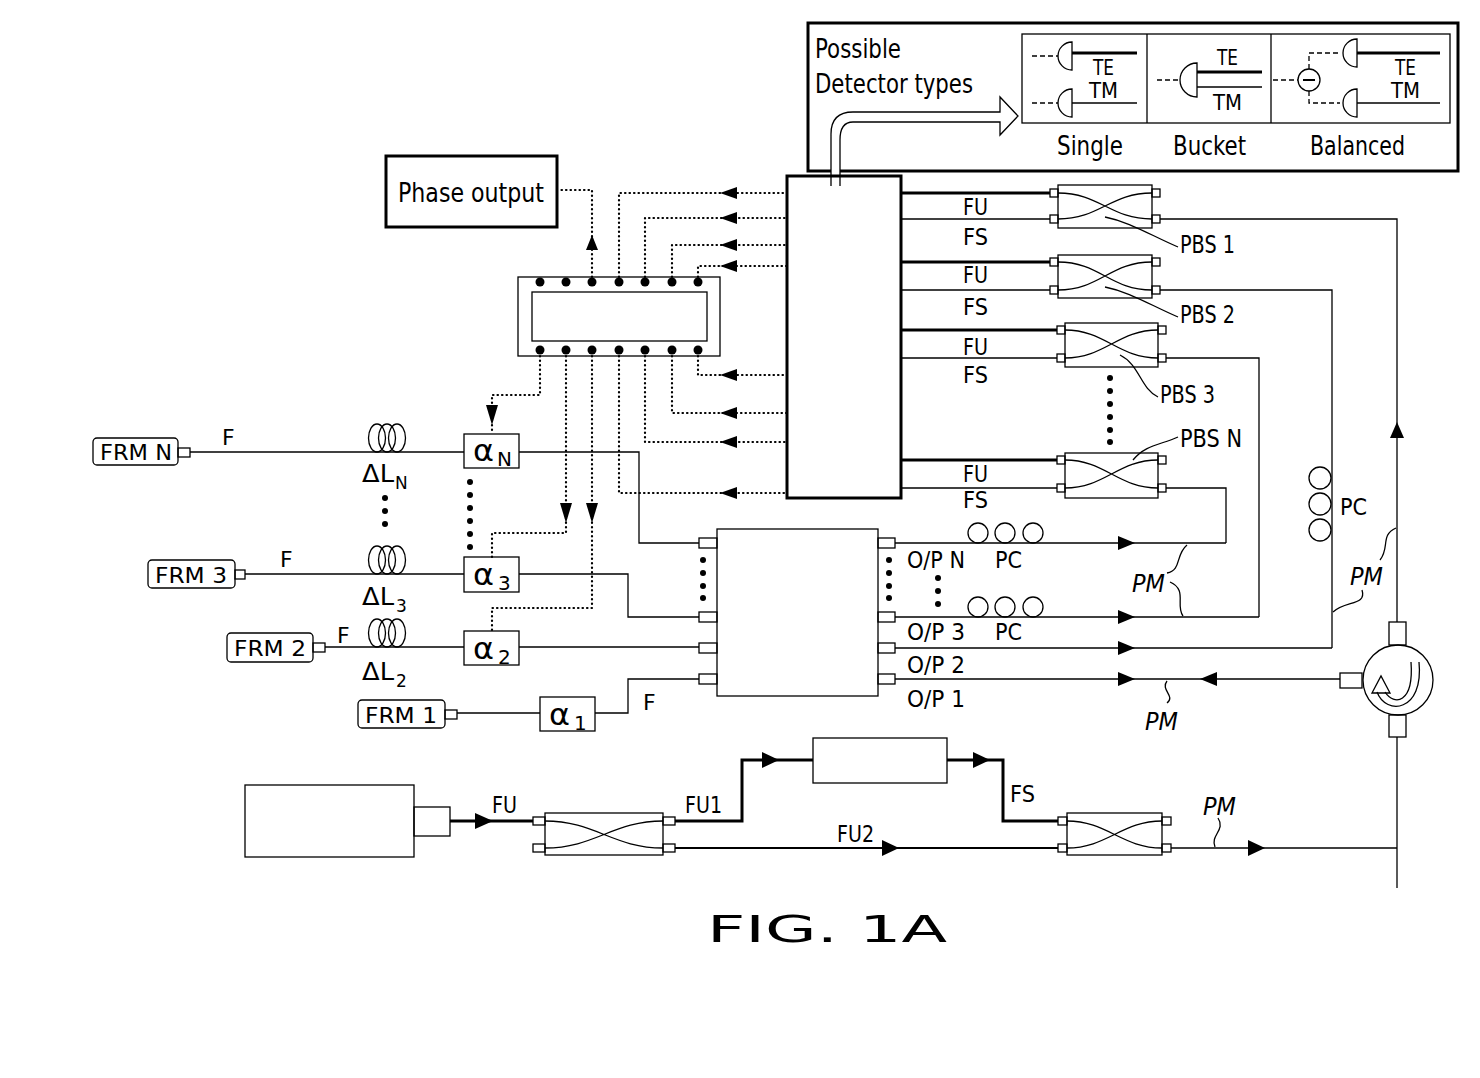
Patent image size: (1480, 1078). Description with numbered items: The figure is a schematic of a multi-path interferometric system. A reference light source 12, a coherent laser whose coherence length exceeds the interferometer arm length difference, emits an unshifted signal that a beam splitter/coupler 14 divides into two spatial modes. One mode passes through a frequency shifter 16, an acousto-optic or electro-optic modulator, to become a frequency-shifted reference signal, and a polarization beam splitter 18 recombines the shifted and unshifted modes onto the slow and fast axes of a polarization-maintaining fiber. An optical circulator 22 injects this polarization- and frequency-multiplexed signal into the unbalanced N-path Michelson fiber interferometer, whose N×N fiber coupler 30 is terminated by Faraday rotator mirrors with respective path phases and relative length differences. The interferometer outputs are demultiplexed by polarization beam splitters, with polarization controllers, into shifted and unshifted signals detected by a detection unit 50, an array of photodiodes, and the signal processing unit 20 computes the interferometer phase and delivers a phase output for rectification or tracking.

The reference light source 12 is at (328, 857).
The beam splitter/coupler 14 is at (603, 857).
The frequency shifter 16 is at (887, 762).
The polarization beam splitter 18 is at (1113, 855).
The signal processing unit 20 is at (557, 315).
The optical circulator 22 is at (1372, 710).
The optical switch / splitter 30 is at (755, 677).
The detection unit 50 is at (905, 399).